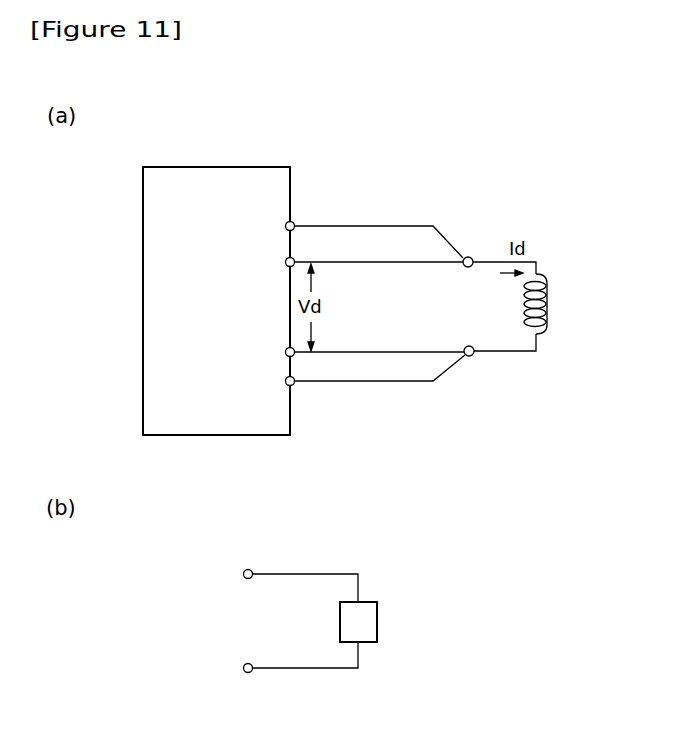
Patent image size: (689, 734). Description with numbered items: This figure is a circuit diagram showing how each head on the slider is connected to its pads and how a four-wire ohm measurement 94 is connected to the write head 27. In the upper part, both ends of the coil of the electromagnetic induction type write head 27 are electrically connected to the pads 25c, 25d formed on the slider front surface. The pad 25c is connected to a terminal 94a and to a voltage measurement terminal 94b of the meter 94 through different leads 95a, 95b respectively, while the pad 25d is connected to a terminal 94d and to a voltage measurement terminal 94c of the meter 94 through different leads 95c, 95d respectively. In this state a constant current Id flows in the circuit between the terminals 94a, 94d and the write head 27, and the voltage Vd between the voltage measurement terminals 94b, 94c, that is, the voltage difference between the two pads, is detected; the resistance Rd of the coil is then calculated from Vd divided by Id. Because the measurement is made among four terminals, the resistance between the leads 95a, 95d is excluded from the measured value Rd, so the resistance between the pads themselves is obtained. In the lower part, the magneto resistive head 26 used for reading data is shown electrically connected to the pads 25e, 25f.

The four-wire ohm measurement 94 is at (143, 312).
The terminal 94a is at (270, 225).
The voltage measurement terminal 94b is at (270, 261).
The voltage measurement terminal 94c is at (270, 351).
The terminal 94d is at (270, 380).
The lead 95a is at (355, 224).
The lead 95b is at (360, 263).
The lead 95c is at (365, 351).
The lead 95d is at (372, 383).
The pad 25c is at (472, 256).
The pad 25d is at (473, 356).
The write head 27 is at (550, 310).
The pad 25e is at (226, 574).
The pad 25f is at (229, 668).
The MR head 26 is at (378, 620).